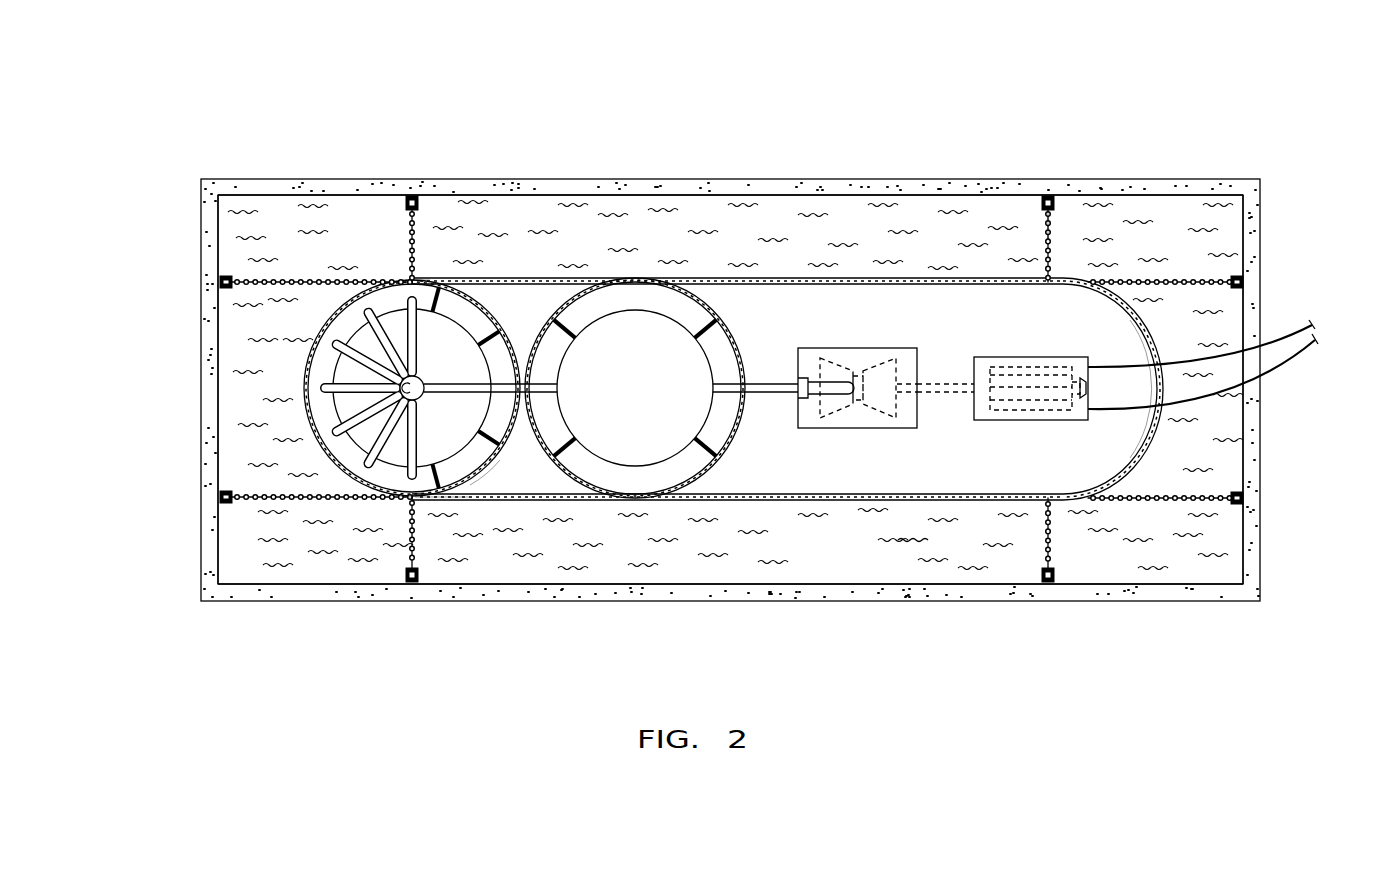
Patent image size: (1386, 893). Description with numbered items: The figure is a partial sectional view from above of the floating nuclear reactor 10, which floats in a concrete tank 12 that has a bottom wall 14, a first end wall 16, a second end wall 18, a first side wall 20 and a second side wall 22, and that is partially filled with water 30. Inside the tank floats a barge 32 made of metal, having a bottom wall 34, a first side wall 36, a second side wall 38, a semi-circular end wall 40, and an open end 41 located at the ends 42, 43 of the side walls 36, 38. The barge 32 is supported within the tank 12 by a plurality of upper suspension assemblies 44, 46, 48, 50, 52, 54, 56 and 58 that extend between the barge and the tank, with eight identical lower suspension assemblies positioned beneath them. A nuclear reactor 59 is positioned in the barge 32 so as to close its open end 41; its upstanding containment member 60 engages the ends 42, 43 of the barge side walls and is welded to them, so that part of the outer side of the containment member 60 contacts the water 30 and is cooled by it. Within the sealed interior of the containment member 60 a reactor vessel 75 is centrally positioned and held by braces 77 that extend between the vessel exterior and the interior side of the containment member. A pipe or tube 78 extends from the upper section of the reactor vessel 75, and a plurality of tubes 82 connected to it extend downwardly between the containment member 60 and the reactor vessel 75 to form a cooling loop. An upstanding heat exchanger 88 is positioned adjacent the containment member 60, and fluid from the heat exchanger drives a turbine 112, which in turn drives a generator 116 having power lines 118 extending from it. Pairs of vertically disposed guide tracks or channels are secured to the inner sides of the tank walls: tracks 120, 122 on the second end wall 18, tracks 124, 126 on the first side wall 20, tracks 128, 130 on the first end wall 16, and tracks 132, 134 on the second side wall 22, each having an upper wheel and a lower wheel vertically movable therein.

The floating nuclear reactor 10 is at (734, 375).
The concrete tank 12 is at (1214, 168).
The bottom wall 14 is at (808, 556).
The first end wall 16 is at (197, 446).
The second end wall 18 is at (1260, 310).
The first side wall 20 is at (712, 592).
The second side wall 22 is at (672, 185).
The water 30 is at (908, 558).
The barge 32 is at (1168, 438).
The bottom wall 34 is at (953, 478).
The first side wall 36 is at (957, 503).
The second side wall 38 is at (980, 280).
The semi-circular end wall 40 is at (1155, 332).
The open end 41 is at (484, 489).
The end of first side wall 42 is at (428, 503).
The end of second side wall 43 is at (415, 280).
The upper suspension assembly 44 is at (1059, 221).
The upper suspension assembly 46 is at (1199, 273).
The upper suspension assembly 48 is at (1218, 512).
The upper suspension assembly 50 is at (1065, 546).
The upper suspension assembly 52 is at (374, 489).
The upper suspension assembly 54 is at (251, 507).
The upper suspension assembly 56 is at (254, 292).
The upper suspension assembly 58 is at (407, 226).
The nuclear reactor 59 is at (307, 388).
The containment member 60 is at (352, 387).
The reactor vessel 75 is at (452, 486).
The braces 77 is at (483, 257).
The pipe or tube 78 is at (524, 378).
The tubes 82 is at (404, 562).
The heat exchanger 88 is at (700, 474).
The turbine 112 is at (881, 434).
The generator 116 is at (1079, 428).
The power lines 118 is at (1273, 368).
The guide track 120 is at (1241, 275).
The guide track 122 is at (1243, 501).
The guide track 124 is at (1045, 577).
The guide track 126 is at (420, 580).
The guide track 128 is at (226, 498).
The guide track 130 is at (222, 277).
The guide track 132 is at (416, 198).
The guide track 134 is at (1039, 224).